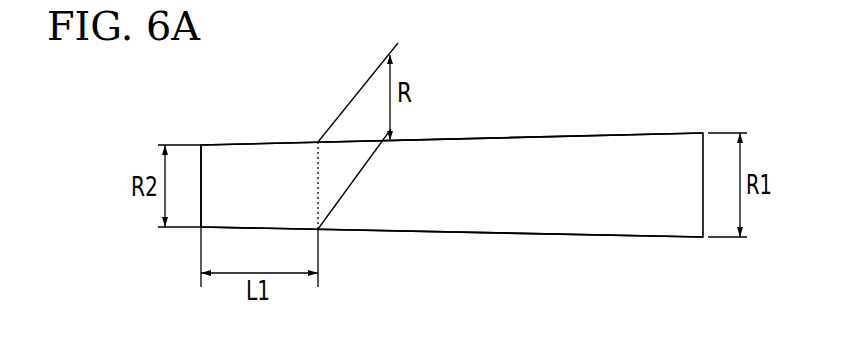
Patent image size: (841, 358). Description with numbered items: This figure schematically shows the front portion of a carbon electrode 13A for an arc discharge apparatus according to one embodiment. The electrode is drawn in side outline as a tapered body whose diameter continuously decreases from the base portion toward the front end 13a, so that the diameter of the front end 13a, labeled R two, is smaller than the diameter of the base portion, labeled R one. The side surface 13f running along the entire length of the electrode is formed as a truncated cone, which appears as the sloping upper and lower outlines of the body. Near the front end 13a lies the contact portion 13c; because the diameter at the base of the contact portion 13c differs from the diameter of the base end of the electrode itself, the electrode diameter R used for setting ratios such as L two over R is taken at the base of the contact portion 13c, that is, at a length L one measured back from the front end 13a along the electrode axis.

The carbon electrode 13A is at (626, 267).
The front end 13a is at (201, 171).
The contact portion 13c is at (256, 135).
The side surface 13f is at (358, 231).